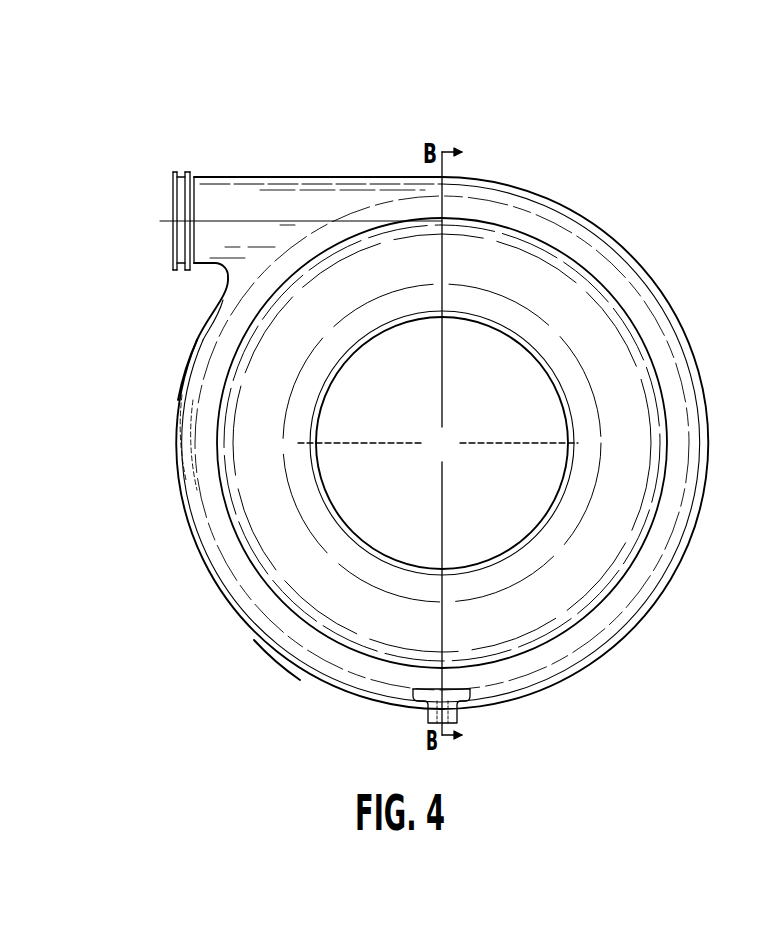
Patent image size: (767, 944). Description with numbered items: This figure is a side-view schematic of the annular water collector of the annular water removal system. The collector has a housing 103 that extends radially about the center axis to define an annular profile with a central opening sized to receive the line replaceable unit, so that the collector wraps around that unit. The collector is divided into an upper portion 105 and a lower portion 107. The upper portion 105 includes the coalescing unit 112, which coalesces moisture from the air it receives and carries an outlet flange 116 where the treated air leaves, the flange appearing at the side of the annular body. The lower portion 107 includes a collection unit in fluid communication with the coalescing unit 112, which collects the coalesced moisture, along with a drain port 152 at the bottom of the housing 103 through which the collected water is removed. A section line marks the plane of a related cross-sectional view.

The coalescing unit 112 is at (602, 179).
The outlet flange 116 is at (175, 172).
The upper portion 105 is at (189, 337).
The housing 103 is at (198, 510).
The lower portion 107 is at (278, 672).
The drain port 152 is at (455, 710).